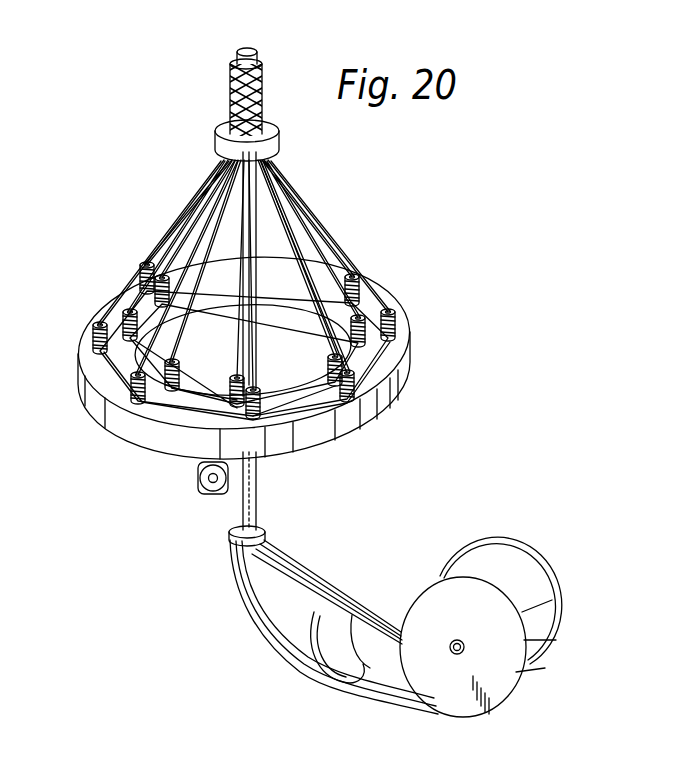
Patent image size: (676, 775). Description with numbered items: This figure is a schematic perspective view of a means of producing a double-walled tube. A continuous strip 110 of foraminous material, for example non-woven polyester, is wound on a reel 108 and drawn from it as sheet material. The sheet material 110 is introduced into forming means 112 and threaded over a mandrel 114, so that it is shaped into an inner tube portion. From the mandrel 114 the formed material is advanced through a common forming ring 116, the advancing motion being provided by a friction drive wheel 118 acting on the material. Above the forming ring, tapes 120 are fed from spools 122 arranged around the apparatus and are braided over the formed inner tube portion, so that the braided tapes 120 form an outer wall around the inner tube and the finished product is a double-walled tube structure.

The reel 108 is at (550, 594).
The continuous strip 110 is at (360, 630).
The forming means 112 is at (242, 578).
The mandrel 114 is at (271, 76).
The common forming ring 116 is at (265, 137).
The friction drive wheel 118 is at (222, 497).
The tapes 120 is at (188, 197).
The spools 122 is at (85, 334).